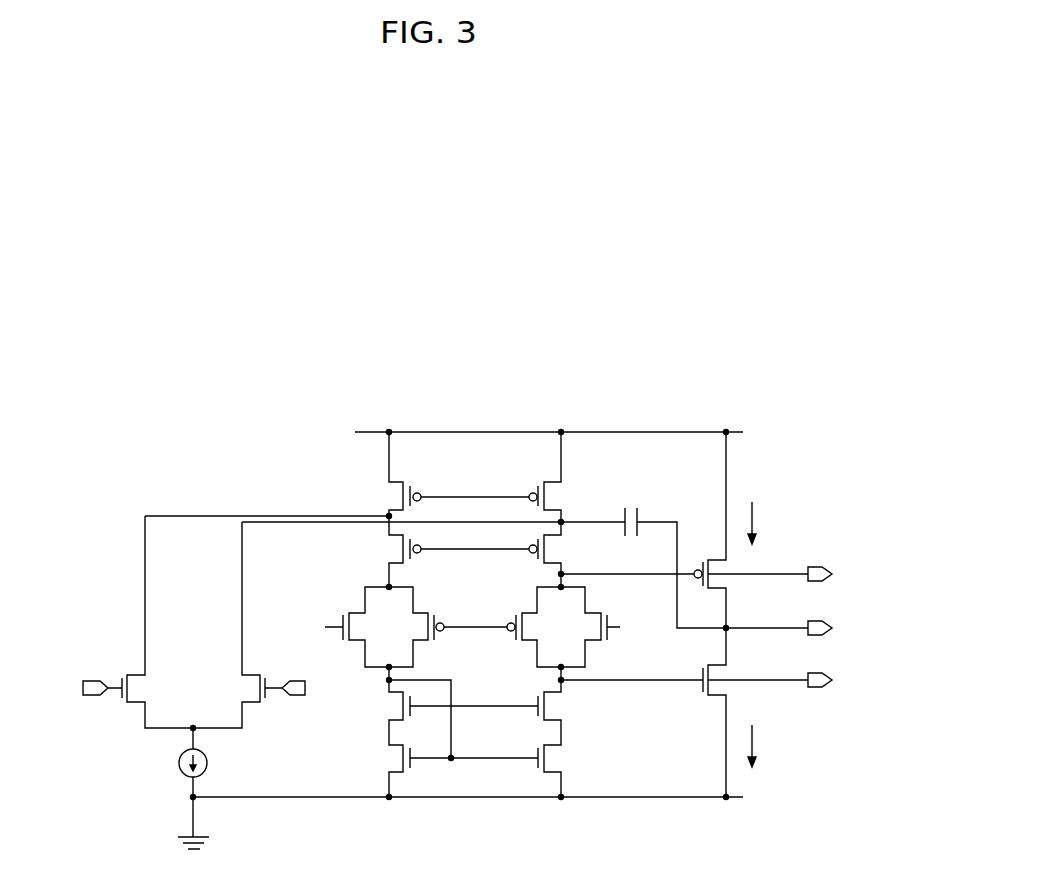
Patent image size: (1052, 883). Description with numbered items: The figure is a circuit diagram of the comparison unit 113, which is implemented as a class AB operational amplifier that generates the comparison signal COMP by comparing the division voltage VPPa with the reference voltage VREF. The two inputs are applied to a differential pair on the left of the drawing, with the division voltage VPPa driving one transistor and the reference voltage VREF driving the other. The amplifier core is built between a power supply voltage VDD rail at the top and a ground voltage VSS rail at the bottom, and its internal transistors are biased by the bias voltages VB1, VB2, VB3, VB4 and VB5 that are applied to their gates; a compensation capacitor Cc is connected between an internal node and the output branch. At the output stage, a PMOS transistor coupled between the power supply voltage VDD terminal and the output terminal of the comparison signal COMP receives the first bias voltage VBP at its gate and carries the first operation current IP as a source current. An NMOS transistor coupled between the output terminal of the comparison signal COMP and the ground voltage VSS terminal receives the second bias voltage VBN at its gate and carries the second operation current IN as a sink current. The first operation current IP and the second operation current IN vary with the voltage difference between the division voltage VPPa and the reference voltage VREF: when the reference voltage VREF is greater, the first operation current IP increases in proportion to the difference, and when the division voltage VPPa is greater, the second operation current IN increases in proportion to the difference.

The comparison unit 113 is at (213, 378).
The bias voltage VB1 PMOS pair VB1 is at (474, 490).
The bias voltage VB2 PMOS pair VB2 is at (474, 544).
The bias voltage VB3 NMOS pairs VB3 is at (463, 724).
The bias voltage VB4 PMOS pair VB4 is at (475, 622).
The bias voltage VB5 NMOS gates VB5 is at (477, 627).
The compensation capacitor Cc is at (631, 509).
The power supply voltage VDD is at (569, 430).
The ground voltage VSS is at (487, 796).
The first bias voltage VBP is at (792, 574).
The comparison signal COMP is at (808, 628).
The second bias voltage VBN is at (793, 680).
The division voltage VPPa is at (76, 689).
The reference voltage VREF is at (305, 689).
The first operation current IP is at (762, 522).
The second operation current IN is at (763, 746).